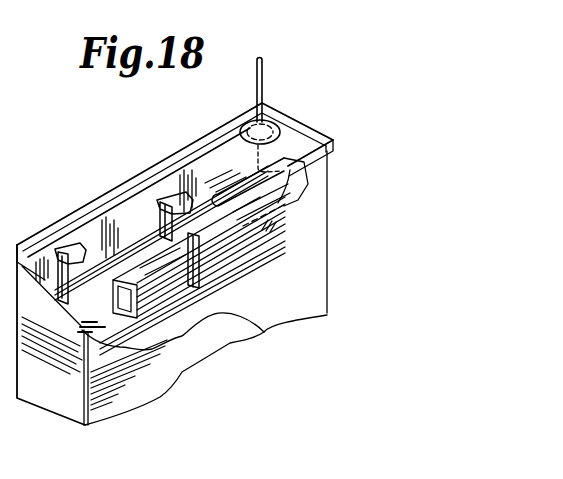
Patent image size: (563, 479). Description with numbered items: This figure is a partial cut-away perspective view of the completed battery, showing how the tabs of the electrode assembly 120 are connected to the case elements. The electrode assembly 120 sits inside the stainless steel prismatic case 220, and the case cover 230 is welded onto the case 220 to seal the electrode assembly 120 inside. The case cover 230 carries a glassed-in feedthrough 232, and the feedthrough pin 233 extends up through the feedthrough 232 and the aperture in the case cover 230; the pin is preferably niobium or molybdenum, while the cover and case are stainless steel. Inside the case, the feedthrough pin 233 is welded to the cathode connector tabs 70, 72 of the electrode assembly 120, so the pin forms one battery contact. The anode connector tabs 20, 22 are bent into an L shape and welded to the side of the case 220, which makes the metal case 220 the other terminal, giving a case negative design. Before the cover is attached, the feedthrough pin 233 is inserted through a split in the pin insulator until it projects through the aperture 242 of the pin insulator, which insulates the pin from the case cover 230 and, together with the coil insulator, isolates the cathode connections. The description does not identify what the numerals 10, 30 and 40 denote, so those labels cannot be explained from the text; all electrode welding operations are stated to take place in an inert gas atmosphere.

The apparatus 10 is at (105, 310).
The anode connector tab 20 is at (163, 203).
The anode connector tab 22 is at (70, 247).
The base 30 is at (4, 221).
The cover 40 is at (12, 103).
The cathode connector tab 70 is at (220, 205).
The cathode connector tab 72 is at (200, 284).
The electrode assembly 120 is at (248, 200).
The prismatic case 220 is at (327, 246).
The case cover 230 is at (322, 134).
The feedthrough 232 is at (244, 122).
The feedthrough pin 233 is at (265, 88).
The aperture 242 is at (250, 176).